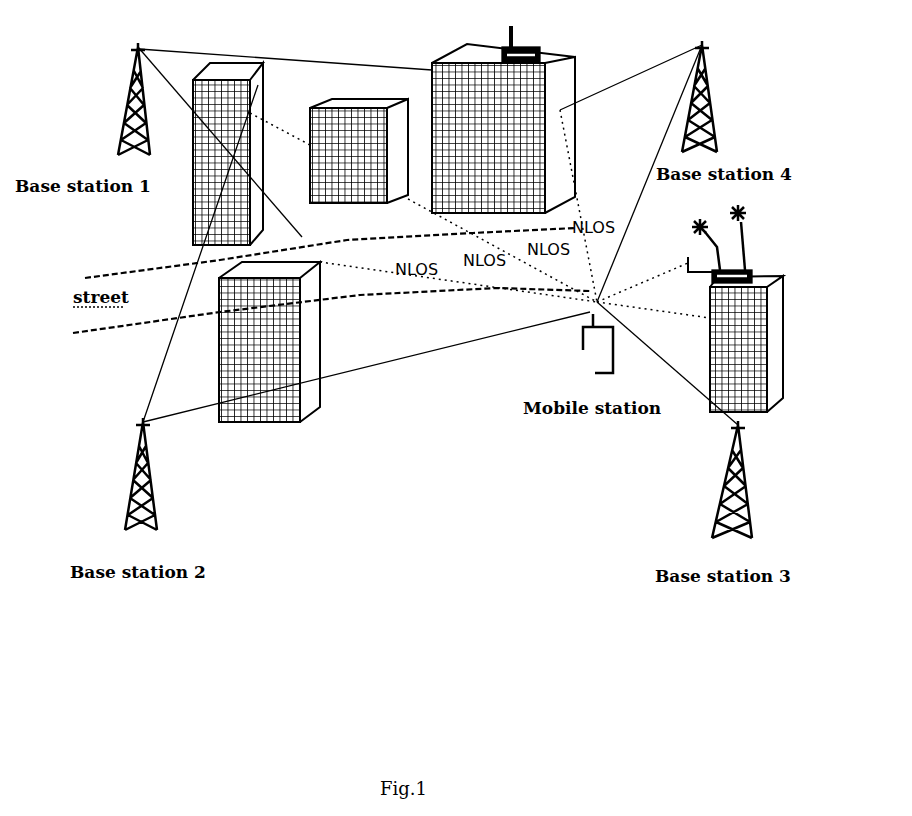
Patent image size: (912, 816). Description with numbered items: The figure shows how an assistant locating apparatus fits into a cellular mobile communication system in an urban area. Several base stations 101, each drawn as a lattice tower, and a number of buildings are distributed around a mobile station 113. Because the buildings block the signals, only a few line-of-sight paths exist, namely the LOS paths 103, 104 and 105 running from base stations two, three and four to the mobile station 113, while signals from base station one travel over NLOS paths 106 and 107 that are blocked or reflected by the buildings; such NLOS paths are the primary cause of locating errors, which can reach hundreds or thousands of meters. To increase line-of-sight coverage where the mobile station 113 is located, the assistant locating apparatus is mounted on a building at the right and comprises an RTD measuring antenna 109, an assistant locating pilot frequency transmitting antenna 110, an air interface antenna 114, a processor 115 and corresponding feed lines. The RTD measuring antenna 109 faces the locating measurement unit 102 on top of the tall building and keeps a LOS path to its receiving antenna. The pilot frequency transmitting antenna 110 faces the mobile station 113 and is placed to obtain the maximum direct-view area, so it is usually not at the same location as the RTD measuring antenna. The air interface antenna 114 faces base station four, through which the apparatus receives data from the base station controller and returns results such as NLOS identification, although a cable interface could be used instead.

The base station 101 is at (127, 103).
The locating measurement unit (LMU) 102 is at (534, 44).
The LOS path 103 is at (415, 355).
The LOS path 104 is at (672, 337).
The LOS path 105 is at (667, 130).
The NLOS path 106 is at (320, 60).
The NLOS path 107 is at (302, 237).
The RTD measuring antenna 109 is at (690, 229).
The assistant locating pilot frequency transmitting antenna 110 is at (688, 272).
The mobile station 113 is at (597, 355).
The air interface antenna 114 is at (755, 222).
The processor 115 is at (757, 273).